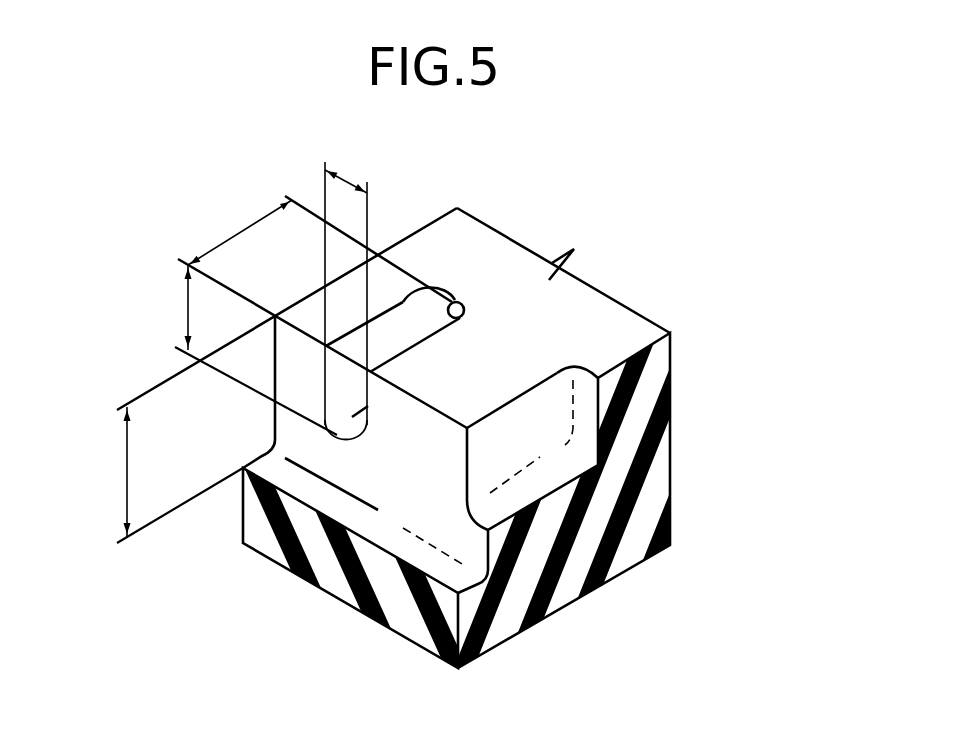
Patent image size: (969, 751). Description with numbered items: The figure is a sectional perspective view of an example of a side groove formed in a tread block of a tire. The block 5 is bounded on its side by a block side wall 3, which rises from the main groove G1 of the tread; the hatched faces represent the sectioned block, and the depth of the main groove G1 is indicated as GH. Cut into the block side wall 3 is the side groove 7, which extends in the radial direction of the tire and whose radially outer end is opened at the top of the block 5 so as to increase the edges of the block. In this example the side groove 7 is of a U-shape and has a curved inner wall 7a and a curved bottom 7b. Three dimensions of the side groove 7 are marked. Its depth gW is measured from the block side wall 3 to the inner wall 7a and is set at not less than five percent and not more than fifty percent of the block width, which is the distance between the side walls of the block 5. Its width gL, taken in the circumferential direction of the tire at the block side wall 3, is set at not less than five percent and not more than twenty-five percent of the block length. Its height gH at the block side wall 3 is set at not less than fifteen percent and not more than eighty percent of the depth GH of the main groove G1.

The block 5 is at (573, 308).
The side groove 7 is at (412, 321).
The inner wall 7a is at (463, 310).
The bottom 7b is at (339, 441).
The block side wall 3 is at (452, 449).
The main groove G1 is at (402, 493).
The depth of the side groove gW is at (237, 233).
The height of the side groove gH is at (188, 313).
The depth of the main groove GH is at (151, 475).
The width of the side groove gL is at (345, 183).